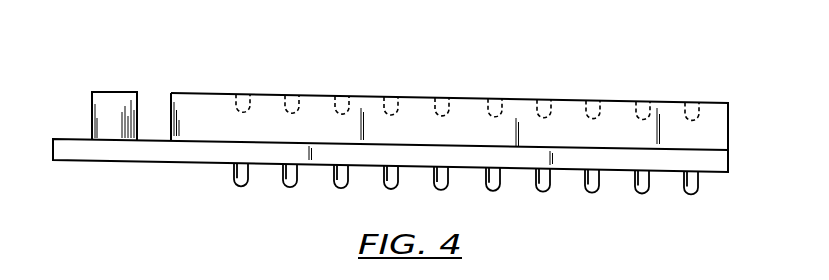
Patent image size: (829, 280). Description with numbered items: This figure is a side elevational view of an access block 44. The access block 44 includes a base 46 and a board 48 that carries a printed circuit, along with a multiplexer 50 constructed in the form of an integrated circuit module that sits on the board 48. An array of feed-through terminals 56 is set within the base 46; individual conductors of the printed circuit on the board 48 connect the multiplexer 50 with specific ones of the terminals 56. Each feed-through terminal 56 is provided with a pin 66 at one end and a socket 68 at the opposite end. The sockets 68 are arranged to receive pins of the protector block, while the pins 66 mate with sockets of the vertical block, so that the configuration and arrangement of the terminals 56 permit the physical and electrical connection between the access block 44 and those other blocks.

The access block 44 is at (385, 90).
The base 46 is at (171, 118).
The board 48 is at (140, 161).
The multiplexer 50 is at (130, 61).
The feed-through terminal 56 is at (553, 196).
The pin 66 is at (491, 177).
The socket 68 is at (541, 110).